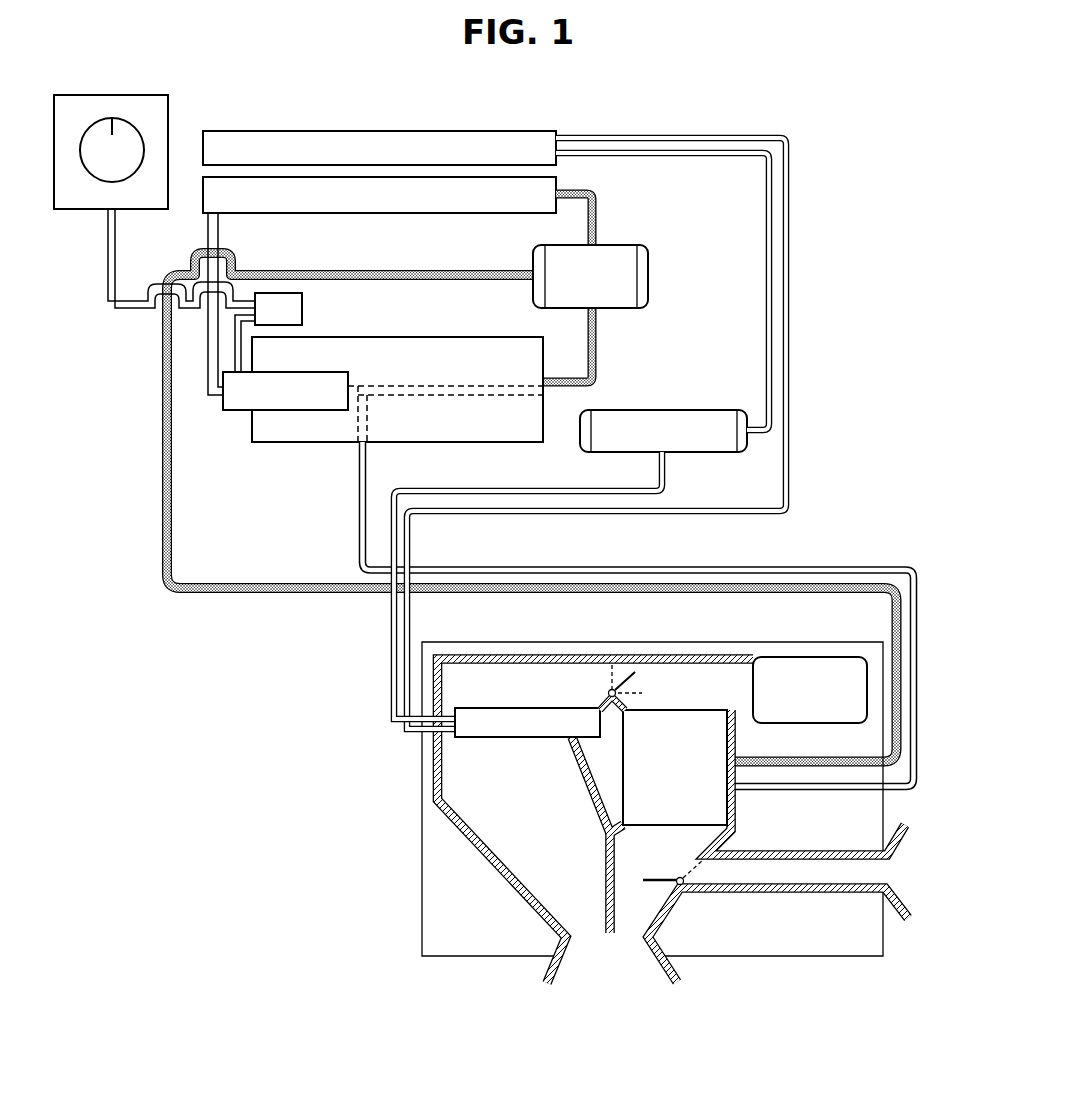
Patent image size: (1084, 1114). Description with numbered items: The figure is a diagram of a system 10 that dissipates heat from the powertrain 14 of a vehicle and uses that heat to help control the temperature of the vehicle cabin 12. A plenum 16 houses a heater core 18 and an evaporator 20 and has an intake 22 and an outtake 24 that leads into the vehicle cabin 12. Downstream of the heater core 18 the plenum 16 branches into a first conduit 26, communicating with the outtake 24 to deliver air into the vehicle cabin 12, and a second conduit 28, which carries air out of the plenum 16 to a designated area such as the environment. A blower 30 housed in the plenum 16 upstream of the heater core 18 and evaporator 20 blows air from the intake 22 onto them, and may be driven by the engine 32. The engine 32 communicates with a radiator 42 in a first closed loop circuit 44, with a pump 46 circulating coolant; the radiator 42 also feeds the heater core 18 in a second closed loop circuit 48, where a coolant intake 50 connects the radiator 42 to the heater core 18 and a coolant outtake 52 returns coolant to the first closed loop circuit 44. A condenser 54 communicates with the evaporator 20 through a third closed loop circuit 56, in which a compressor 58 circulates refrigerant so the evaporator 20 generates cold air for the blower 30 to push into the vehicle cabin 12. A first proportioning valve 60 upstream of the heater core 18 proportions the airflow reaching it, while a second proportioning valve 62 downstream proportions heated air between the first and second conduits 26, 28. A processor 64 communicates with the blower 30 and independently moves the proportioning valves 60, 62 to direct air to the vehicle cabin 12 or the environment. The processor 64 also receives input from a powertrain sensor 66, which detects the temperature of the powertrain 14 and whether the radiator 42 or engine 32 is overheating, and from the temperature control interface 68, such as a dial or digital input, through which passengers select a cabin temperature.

The system 10 is at (735, 99).
The vehicle cabin 12 is at (610, 1036).
The powertrain 14 is at (286, 459).
The plenum 16 is at (460, 780).
The heater core 18 is at (659, 777).
The evaporator 20 is at (509, 735).
The intake 22 is at (870, 648).
The outtake 24 is at (597, 968).
The first conduit 26 is at (620, 922).
The second conduit 28 is at (774, 882).
The blower 30 is at (792, 702).
The engine 32 is at (426, 433).
The radiator 42 is at (364, 205).
The first closed loop circuit 44 is at (599, 333).
The pump 46 is at (574, 286).
The second closed loop circuit 48 is at (268, 600).
The coolant intake 50 is at (778, 759).
The coolant outtake 52 is at (774, 797).
The condenser 54 is at (364, 159).
The third closed loop circuit 56 is at (801, 306).
The compressor 58 is at (646, 444).
The first proportioning valve 60 is at (606, 689).
The second proportioning valve 62 is at (672, 868).
The processor 64 is at (294, 323).
The powertrain sensor 66 is at (228, 400).
The temperature control interface 68 is at (113, 95).